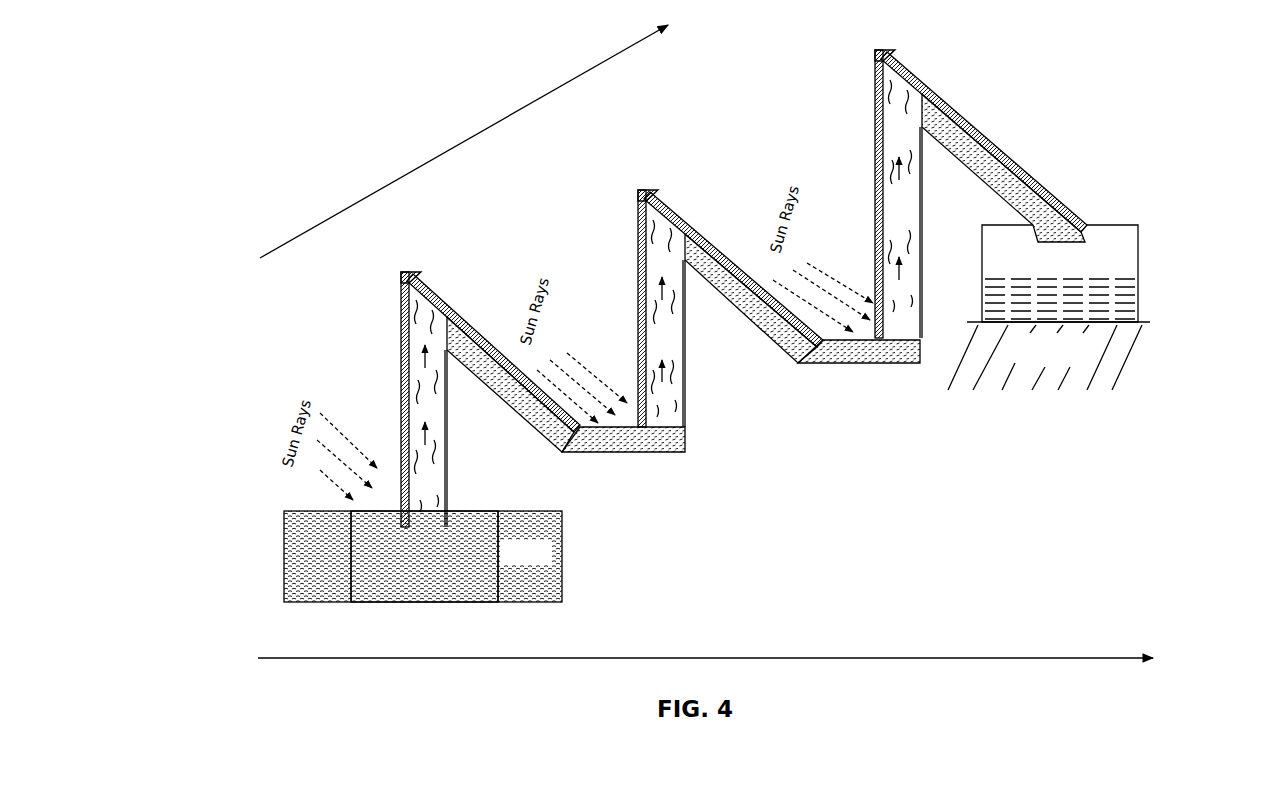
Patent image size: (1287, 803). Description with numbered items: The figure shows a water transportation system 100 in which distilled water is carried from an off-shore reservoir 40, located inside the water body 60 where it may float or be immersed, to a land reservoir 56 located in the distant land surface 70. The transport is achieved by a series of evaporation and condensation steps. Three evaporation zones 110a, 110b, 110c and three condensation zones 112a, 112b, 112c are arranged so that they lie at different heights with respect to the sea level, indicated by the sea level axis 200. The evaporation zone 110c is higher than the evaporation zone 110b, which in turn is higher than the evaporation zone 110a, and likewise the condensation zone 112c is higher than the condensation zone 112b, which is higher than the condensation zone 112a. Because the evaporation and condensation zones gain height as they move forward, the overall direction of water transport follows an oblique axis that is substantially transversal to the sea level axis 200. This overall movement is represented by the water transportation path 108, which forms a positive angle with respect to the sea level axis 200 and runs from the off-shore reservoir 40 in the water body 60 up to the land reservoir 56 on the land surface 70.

The solar desalination system 100 is at (1085, 62).
The water transportation path 108 is at (385, 141).
The condensation zone 112a is at (490, 381).
The condensation zone 112b is at (730, 294).
The condensation zone 112c is at (981, 181).
The evaporation zone 110a is at (476, 508).
The evaporation zone 110b is at (663, 439).
The evaporation zone 110c is at (859, 376).
The land reservoir 56 is at (1090, 273).
The land surface 70 is at (1049, 374).
The water body 60 is at (423, 578).
The off-shore reservoir 40 is at (424, 578).
The sea level axis 200 is at (705, 630).